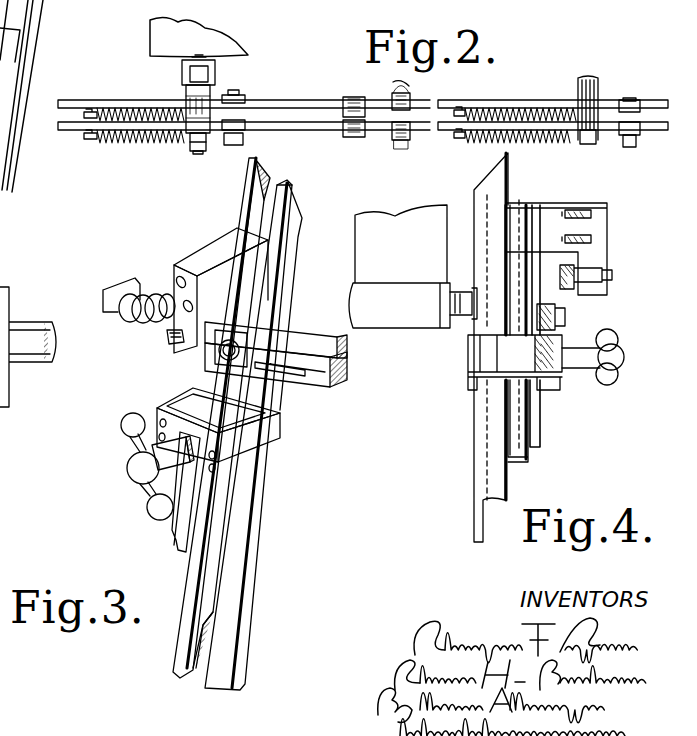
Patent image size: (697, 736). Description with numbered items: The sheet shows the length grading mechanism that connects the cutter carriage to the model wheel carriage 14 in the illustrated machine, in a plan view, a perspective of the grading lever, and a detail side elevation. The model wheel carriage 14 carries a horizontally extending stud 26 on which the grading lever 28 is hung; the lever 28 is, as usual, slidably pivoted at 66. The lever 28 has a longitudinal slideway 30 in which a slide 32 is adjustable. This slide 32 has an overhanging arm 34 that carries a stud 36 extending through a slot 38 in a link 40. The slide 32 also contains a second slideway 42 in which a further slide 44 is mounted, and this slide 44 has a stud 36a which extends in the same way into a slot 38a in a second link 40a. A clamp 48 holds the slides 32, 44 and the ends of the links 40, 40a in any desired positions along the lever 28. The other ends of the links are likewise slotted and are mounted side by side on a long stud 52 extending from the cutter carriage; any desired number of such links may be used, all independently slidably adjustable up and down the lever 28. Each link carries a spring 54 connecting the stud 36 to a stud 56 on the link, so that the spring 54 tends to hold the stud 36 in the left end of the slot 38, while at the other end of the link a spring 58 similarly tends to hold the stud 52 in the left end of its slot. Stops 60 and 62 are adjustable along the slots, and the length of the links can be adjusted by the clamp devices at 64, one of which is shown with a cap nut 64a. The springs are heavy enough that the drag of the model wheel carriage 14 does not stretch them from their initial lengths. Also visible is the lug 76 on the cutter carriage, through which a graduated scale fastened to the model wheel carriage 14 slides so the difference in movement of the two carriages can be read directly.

In FIG. 2, the model wheel carriage 14 is at (190, 37).
In FIG. 4, the model wheel carriage 14 is at (399, 266).
In FIG. 2, the stud 26 is at (205, 60).
In FIG. 4, the stud 26 is at (455, 318).
In FIG. 2, the grading lever 28 is at (33, 19).
In FIG. 3, the grading lever 28 is at (275, 296).
In FIG. 4, the grading lever 28 is at (477, 430).
In FIG. 3, the longitudinal slideway 30 is at (264, 207).
In FIG. 3, the slide 32 is at (262, 236).
In FIG. 4, the slide 32 is at (512, 445).
In FIG. 3, the overhanging arm 34 is at (176, 288).
In FIG. 4, the overhanging arm 34 is at (592, 258).
In FIG. 2, the stud 36 is at (193, 150).
In FIG. 3, the stud 36 is at (172, 344).
In FIG. 4, the stud 36 is at (606, 277).
In FIG. 2, the stud 36a is at (186, 97).
In FIG. 4, the stud 36a is at (568, 315).
In FIG. 3, the slot 38 is at (270, 380).
In FIG. 4, the slot 38 is at (588, 240).
In FIG. 3, the slot 38a is at (240, 310).
In FIG. 4, the slot 38a is at (560, 375).
In FIG. 2, the link 40 is at (284, 131).
In FIG. 3, the link 40 is at (322, 385).
In FIG. 2, the link 40a is at (280, 105).
In FIG. 3, the link 40a is at (342, 345).
In FIG. 3, the second slideway 42 is at (203, 525).
In FIG. 3, the slide 44 is at (190, 488).
In FIG. 4, the slide 44 is at (536, 437).
In FIG. 3, the clamp 48 is at (128, 466).
In FIG. 4, the clamp 48 is at (617, 356).
In FIG. 2, the long stud 52 is at (586, 80).
In FIG. 2, the spring 54 is at (135, 143).
In FIG. 3, the spring 54 is at (135, 322).
In FIG. 2, the stud 56 is at (88, 139).
In FIG. 2, the spring 58 is at (530, 131).
In FIG. 2, the stop 60 is at (222, 140).
In FIG. 3, the stop 60 is at (222, 353).
In FIG. 2, the stop 62 is at (640, 136).
In FIG. 2, the clamp device 64 is at (400, 130).
In FIG. 2, the cap nut 64a is at (399, 108).
In FIG. 3, the pivot 66 is at (5, 310).
In FIG. 2, the lug 76 is at (301, 19).